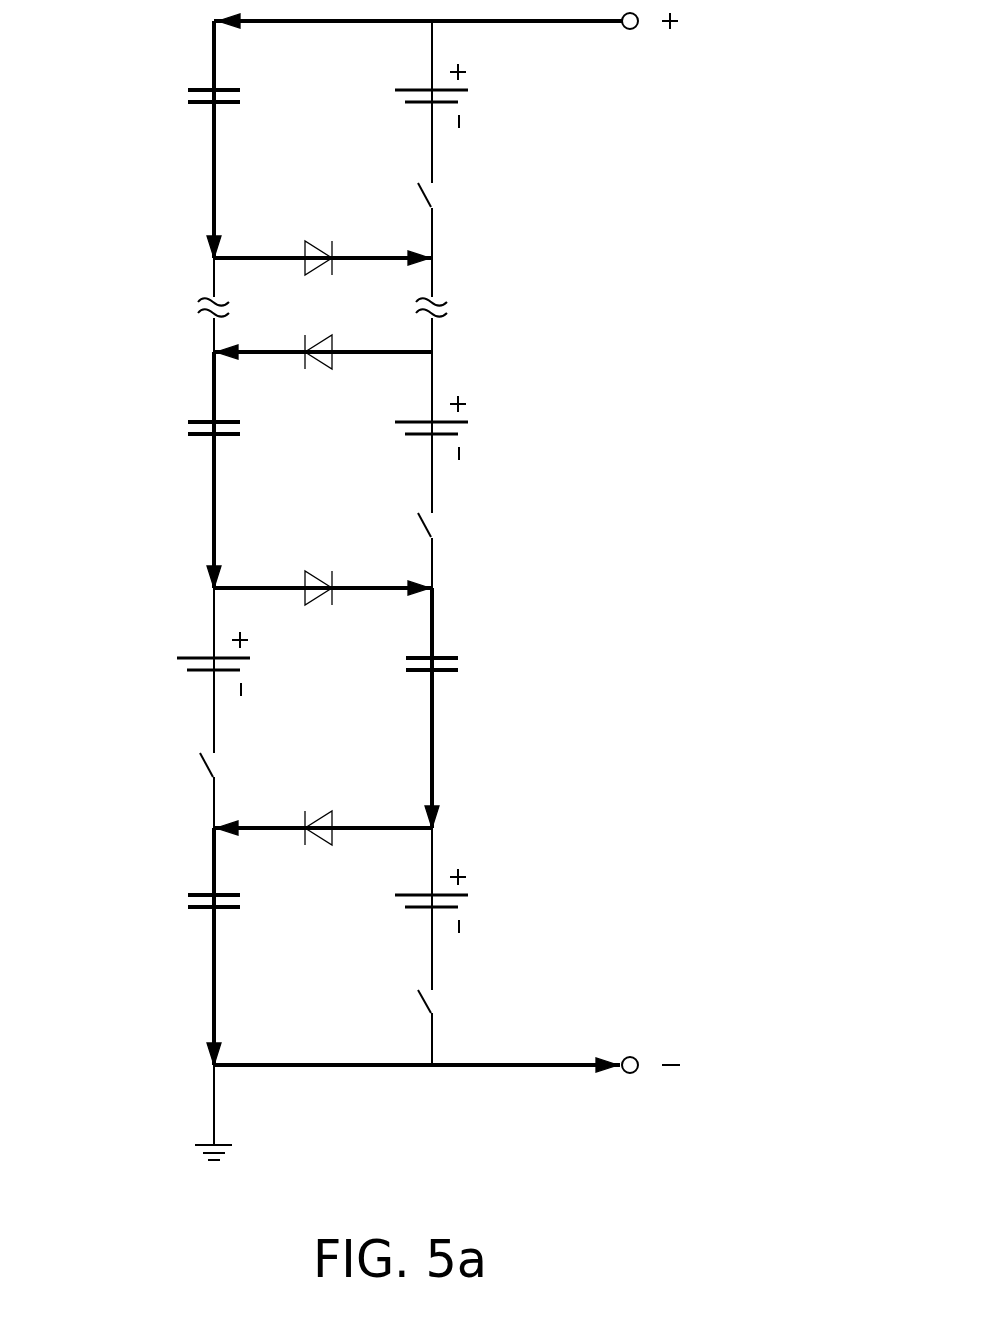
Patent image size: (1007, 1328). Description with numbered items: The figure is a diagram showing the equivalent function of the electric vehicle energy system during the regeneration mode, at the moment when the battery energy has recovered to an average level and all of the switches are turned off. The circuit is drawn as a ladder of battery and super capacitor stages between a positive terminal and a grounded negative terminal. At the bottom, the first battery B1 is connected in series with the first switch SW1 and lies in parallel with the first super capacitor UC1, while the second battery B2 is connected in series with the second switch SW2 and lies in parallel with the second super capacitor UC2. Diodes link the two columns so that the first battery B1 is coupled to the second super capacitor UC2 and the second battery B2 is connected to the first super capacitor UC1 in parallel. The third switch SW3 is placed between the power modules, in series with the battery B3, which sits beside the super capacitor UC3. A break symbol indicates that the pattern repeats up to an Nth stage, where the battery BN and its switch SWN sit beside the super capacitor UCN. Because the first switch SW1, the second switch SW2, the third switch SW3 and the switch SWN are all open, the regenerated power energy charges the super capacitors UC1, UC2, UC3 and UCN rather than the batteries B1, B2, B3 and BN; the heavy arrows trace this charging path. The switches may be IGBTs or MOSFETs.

The super capacitor UCN is at (198, 78).
The battery BN is at (478, 98).
The switch SWN is at (443, 200).
The super capacitor UC3 is at (190, 410).
The battery B3 is at (478, 428).
The third switch SW3 is at (443, 530).
The second battery B2 is at (168, 652).
The second super capacitor UC2 is at (478, 663).
The second switch SW2 is at (192, 767).
The first super capacitor UC1 is at (190, 884).
The first battery B1 is at (478, 903).
The first switch SW1 is at (443, 1007).